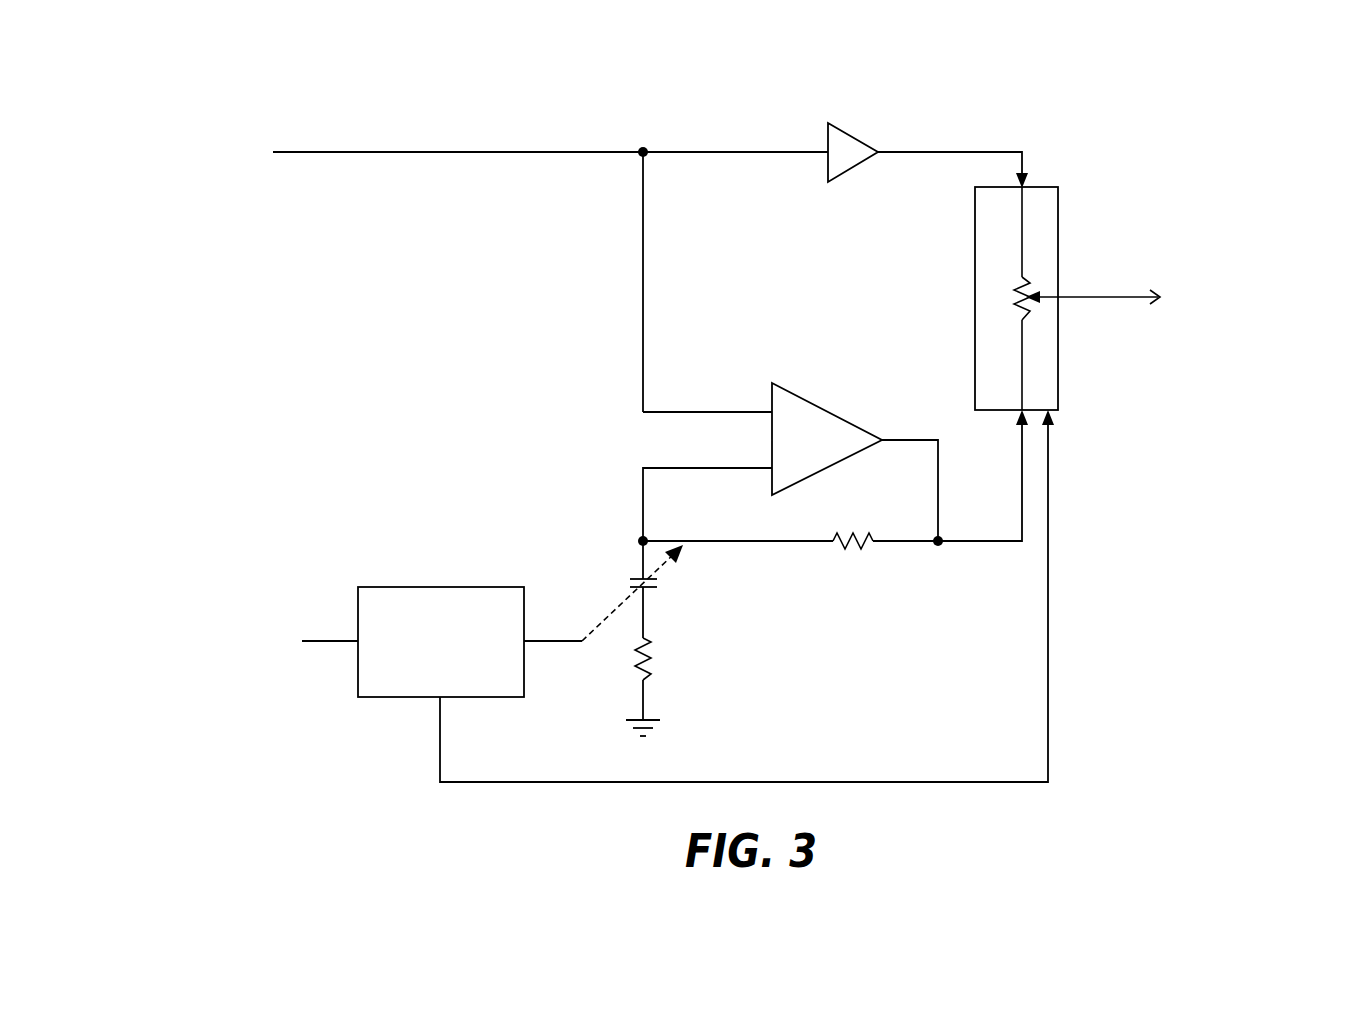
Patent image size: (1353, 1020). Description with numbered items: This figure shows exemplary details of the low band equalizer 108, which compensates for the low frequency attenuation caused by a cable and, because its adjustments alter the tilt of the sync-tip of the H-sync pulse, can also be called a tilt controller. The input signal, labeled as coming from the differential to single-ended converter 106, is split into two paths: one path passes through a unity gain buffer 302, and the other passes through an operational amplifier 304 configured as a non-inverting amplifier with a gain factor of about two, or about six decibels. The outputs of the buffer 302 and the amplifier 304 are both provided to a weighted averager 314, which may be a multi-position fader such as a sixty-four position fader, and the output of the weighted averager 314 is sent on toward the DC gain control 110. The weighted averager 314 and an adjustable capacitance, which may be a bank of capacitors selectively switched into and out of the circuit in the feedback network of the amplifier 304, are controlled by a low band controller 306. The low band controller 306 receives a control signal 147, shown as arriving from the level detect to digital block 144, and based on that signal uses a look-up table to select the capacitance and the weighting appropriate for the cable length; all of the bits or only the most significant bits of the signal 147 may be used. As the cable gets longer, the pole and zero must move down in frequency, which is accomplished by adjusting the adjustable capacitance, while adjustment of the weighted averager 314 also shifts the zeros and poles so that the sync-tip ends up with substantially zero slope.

The low band equalizer 108 is at (712, 406).
The differential to single-ended converter 106 is at (484, 174).
The unity gain buffer 302 is at (886, 134).
The operational amplifier 304 is at (838, 426).
The low band controller 306 is at (443, 610).
The weighted averager 314 is at (1048, 270).
The DC gain control 110 is at (1155, 298).
The level detect to digital 144 is at (239, 648).
The control signal 147 is at (345, 584).